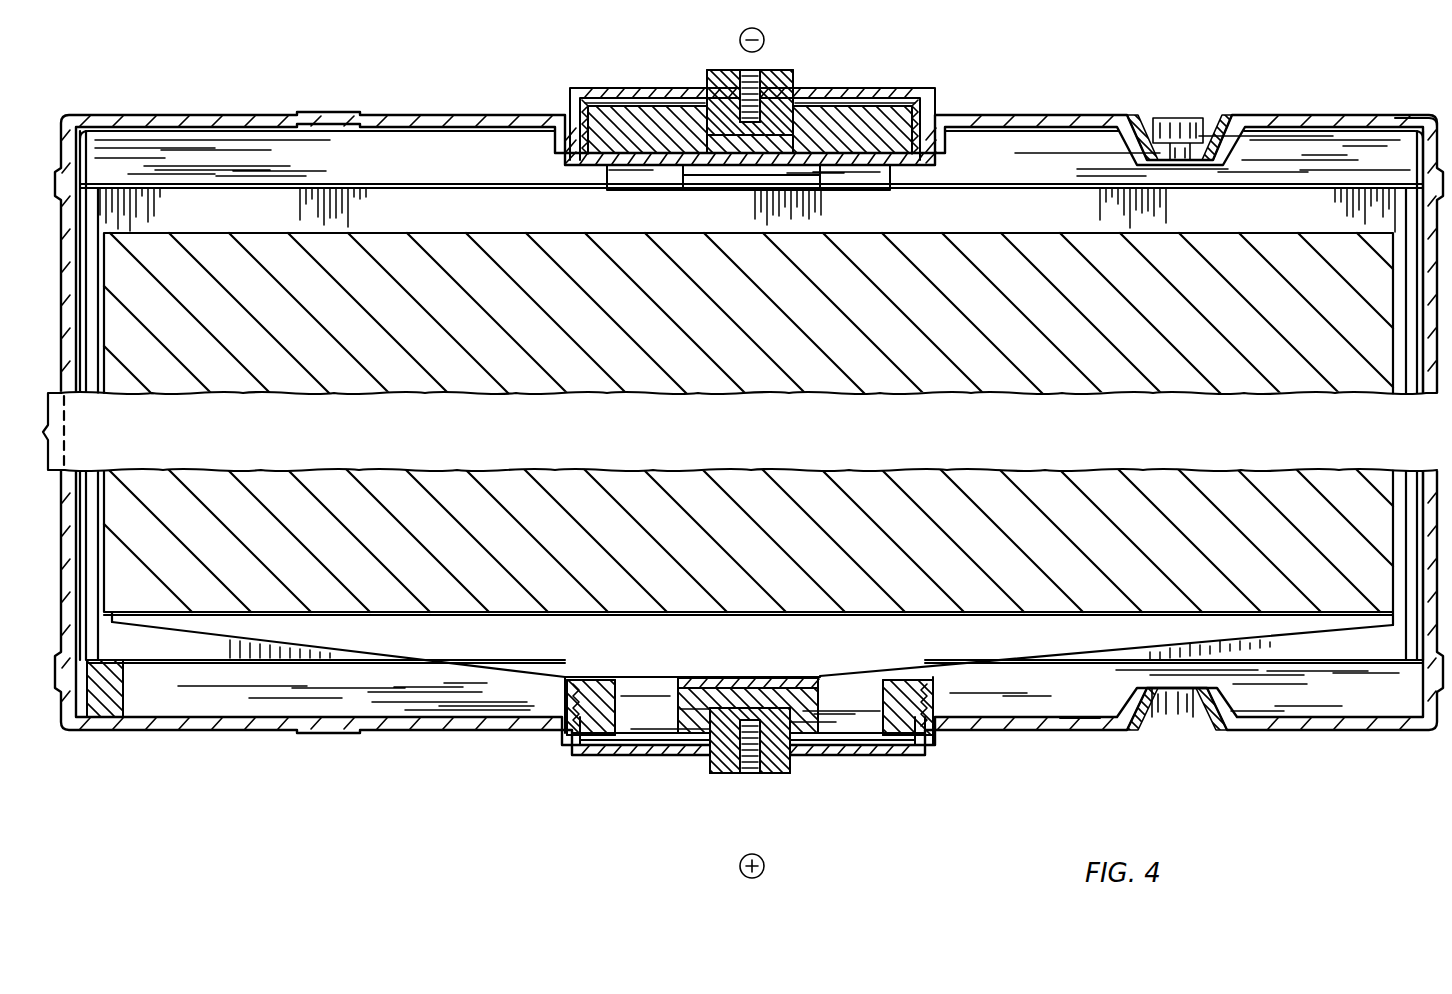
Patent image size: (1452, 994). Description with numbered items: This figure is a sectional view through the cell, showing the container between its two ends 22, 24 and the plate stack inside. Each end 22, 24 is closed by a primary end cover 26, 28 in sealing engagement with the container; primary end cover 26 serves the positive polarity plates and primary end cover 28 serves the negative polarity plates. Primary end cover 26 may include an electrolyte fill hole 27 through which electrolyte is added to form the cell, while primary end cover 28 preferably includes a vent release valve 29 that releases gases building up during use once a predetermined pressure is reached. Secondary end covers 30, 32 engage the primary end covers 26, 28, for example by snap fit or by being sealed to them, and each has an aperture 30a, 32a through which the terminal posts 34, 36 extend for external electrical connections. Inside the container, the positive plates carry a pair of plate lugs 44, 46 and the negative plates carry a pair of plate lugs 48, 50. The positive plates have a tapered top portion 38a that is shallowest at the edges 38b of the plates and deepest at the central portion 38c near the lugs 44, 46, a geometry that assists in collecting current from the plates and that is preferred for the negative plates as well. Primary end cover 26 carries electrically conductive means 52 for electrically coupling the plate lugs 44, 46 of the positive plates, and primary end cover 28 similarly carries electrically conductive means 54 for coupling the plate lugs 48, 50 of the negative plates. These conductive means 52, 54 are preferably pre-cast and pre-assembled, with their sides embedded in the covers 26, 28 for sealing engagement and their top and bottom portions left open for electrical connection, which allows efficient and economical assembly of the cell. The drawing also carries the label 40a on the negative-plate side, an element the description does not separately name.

The end 22 is at (1413, 670).
The end 24 is at (1413, 170).
The primary end cover 26 is at (1340, 733).
The electrolyte fill hole 27 is at (1193, 730).
The primary end cover 28 is at (1312, 118).
The vent release valve 29 is at (1165, 115).
The secondary end cover 30 is at (657, 757).
The aperture 30a is at (777, 773).
The secondary end cover 32 is at (888, 90).
The aperture 32a is at (790, 86).
The terminal post 34 is at (740, 768).
The terminal post 36 is at (710, 75).
The tapered top portion 38a is at (1107, 668).
The edges 38b is at (120, 622).
The central portion 38c is at (533, 667).
The bottom wall portion 40a is at (1077, 727).
The plate lug 44 is at (633, 735).
The plate lug 46 is at (873, 733).
The plate lug 48 is at (636, 160).
The plate lug 50 is at (868, 186).
The electrically conductive means 52 is at (945, 742).
The electrically conductive means 54 is at (930, 93).